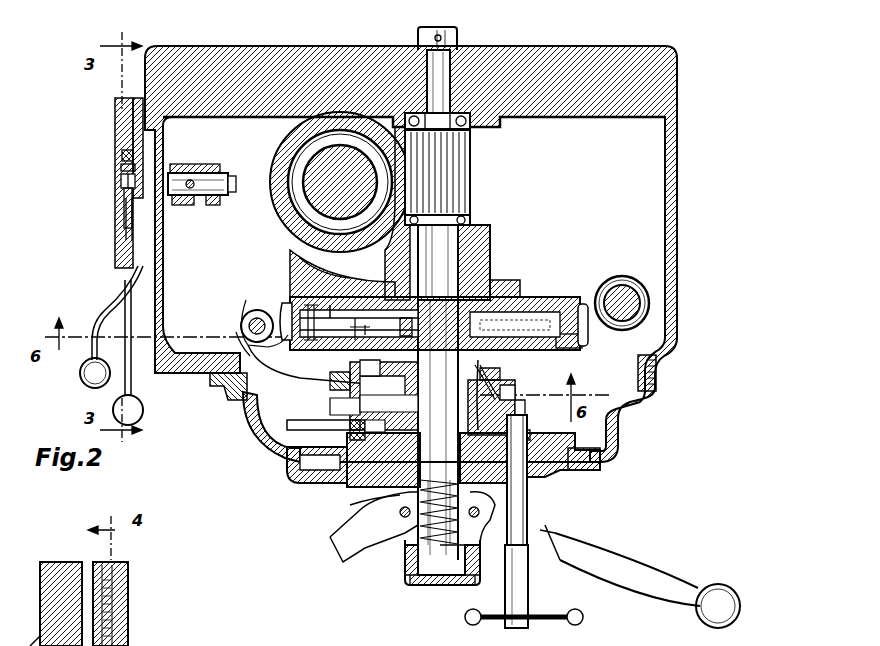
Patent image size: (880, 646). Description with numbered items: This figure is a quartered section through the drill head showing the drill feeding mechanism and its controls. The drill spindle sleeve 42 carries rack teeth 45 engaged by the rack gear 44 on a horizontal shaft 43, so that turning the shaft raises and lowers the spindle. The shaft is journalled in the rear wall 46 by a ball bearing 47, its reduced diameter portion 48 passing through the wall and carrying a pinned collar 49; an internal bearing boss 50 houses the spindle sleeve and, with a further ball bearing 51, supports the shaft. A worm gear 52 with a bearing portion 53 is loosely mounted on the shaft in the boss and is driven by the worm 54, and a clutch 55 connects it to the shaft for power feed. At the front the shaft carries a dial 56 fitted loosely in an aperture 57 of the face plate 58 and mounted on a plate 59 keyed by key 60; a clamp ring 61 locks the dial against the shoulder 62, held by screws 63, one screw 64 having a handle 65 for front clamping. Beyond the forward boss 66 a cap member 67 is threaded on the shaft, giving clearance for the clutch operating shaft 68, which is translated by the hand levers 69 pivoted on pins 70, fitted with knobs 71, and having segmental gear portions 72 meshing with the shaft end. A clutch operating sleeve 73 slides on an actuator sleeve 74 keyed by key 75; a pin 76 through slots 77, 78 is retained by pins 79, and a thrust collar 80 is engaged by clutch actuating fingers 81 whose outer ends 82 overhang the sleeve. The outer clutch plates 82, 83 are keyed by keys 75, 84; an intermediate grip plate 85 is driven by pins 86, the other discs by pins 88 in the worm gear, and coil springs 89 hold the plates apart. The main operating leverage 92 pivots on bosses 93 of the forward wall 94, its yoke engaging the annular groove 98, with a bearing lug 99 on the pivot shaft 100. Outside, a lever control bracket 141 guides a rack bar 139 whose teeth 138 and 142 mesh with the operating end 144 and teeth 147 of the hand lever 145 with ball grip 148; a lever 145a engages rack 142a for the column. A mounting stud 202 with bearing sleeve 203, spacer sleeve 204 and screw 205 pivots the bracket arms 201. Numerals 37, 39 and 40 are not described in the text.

The cap 37 is at (284, 303).
The fitting 39 is at (32, 640).
The shaft 40 is at (340, 205).
The drill spindle sleeve 42 is at (286, 238).
The shaft 43 is at (452, 258).
The rack gear 44 is at (471, 180).
The rack teeth 45 is at (385, 148).
The rear wall 46 is at (560, 64).
The ball bearing 47 is at (468, 128).
The reduced diameter portion 48 is at (441, 78).
The collar 49 is at (450, 30).
The internal bearing boss 50 is at (302, 260).
The ball bearing 51 is at (470, 218).
The worm gear 52 is at (540, 297).
The bearing portion 53 is at (495, 282).
The worm 54 is at (618, 282).
The clutch 55 is at (565, 346).
The dial 56 is at (585, 471).
The aperture 57 is at (600, 462).
The face plate 58 is at (622, 420).
The plate 59 is at (352, 486).
The key 60 is at (492, 433).
The clamp ring 61 is at (532, 440).
The shoulder 62 is at (528, 492).
The screws 63 is at (350, 430).
The screw 64 is at (531, 432).
The handle 65 is at (556, 620).
The forward boss 66 is at (410, 548).
The cap member 67 is at (447, 586).
The clutch operating shaft 68 is at (384, 484).
The hand levers 69 is at (342, 540).
The pivot pins 70 is at (398, 514).
The manipulating knobs 71 is at (716, 590).
The segmental gear portions 72 is at (365, 506).
The clutch operating sleeve 73 is at (500, 374).
The actuator sleeve 74 is at (370, 372).
The key 75 is at (485, 380).
The pin 76 is at (368, 424).
The slots 77 is at (340, 372).
The slots 78 is at (348, 383).
The pins 79 is at (368, 403).
The thrust collar 80 is at (498, 410).
The clutch actuating fingers 81 is at (526, 420).
The outer ends / clutch plate 82 is at (330, 350).
The clutch plate 83 is at (356, 318).
The key 84 is at (506, 297).
The intermediate grip plate 85 is at (583, 303).
The pins 86 is at (405, 318).
The pins 88 is at (310, 304).
The coil springs 89 is at (330, 305).
The main operating leverage 92 is at (323, 427).
The bosses 93 is at (236, 333).
The forward wall 94 is at (212, 384).
The annular groove 98 is at (340, 404).
The bearing lug 99 is at (250, 338).
The pivot shaft 100 is at (256, 320).
The rack teeth 138 is at (126, 645).
The rack bar 139 is at (120, 167).
The lever control bracket 141 is at (118, 128).
The rack teeth 142 is at (120, 182).
The rack 142a is at (121, 154).
The operating end 144 is at (126, 222).
The hand lever 145 is at (104, 300).
The manually operated lever 145a is at (129, 383).
The rack teeth 147 is at (123, 196).
The ball grip 148 is at (81, 375).
The arms 201 is at (174, 204).
The mounting stud 202 is at (231, 193).
The bearing sleeve 203 is at (180, 178).
The spacer sleeve 204 is at (200, 165).
The screw 205 is at (196, 180).